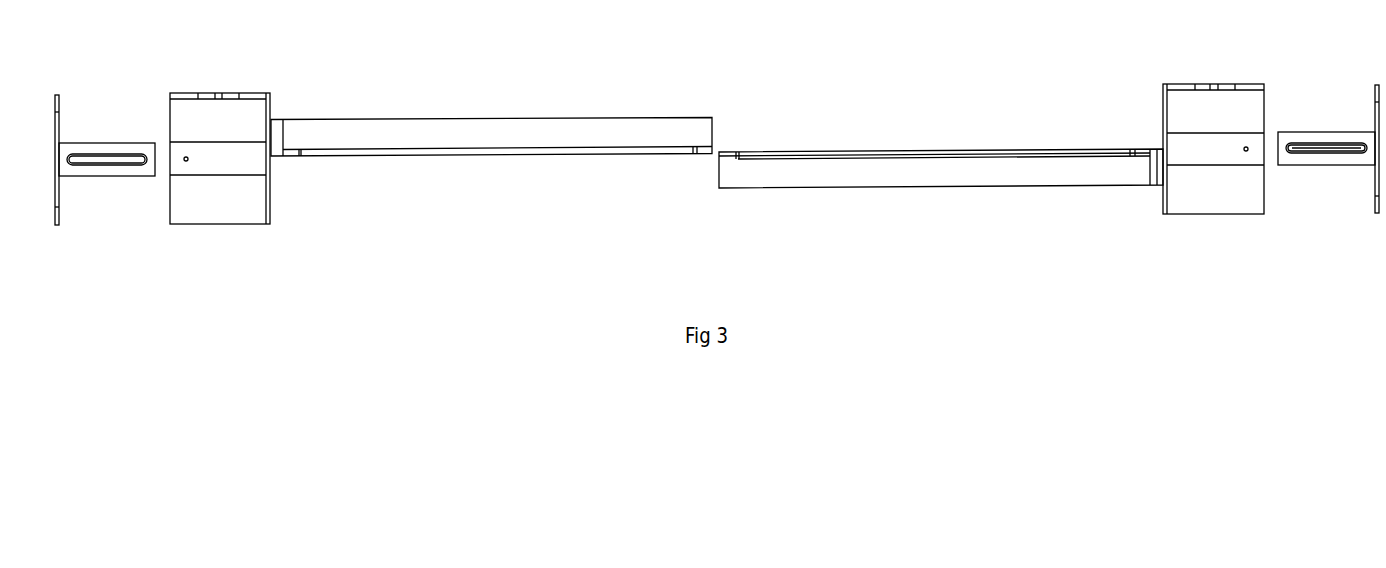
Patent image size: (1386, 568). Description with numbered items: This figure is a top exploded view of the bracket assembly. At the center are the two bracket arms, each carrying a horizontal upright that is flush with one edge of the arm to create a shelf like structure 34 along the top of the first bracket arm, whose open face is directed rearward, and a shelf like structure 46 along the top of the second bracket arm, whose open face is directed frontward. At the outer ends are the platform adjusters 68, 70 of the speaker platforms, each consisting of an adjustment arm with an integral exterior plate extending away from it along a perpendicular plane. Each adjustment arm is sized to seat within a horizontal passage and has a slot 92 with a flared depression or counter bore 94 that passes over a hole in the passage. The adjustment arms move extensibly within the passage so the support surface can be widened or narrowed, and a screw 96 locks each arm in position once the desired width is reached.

The shelf like structure 34 is at (523, 132).
The shelf like structure 46 is at (900, 176).
The platform adjuster 68 is at (106, 193).
The platform adjuster 70 is at (1328, 169).
The slot 92 is at (1303, 146).
The flared depression/counter bore 94 is at (1345, 143).
The screw 96 is at (1332, 150).